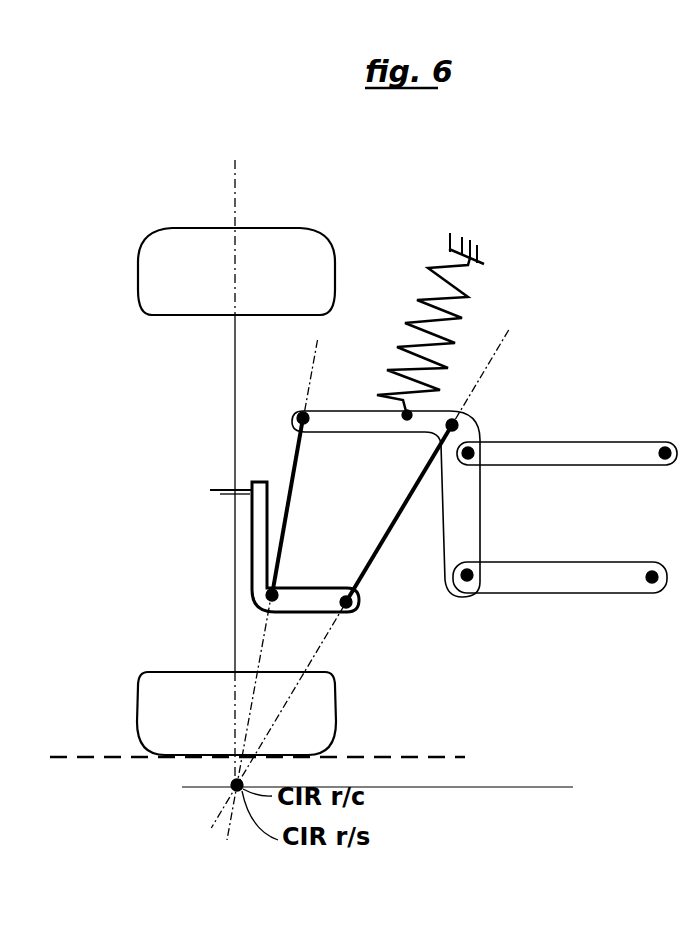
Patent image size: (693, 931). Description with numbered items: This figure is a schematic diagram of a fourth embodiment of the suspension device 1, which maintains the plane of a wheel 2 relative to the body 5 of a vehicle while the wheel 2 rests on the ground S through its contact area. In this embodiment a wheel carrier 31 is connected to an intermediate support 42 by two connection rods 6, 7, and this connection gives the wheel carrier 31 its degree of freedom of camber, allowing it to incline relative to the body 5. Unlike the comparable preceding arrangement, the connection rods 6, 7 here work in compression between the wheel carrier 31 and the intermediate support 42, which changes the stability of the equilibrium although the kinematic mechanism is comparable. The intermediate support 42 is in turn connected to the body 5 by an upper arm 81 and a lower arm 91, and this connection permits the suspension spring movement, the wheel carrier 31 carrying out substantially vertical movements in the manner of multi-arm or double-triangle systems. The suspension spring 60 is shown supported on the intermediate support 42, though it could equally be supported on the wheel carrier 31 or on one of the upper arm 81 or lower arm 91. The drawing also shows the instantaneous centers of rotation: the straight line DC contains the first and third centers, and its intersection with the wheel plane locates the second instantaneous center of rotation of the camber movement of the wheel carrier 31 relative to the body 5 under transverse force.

The suspension device 1 is at (443, 472).
The wheel 2 is at (235, 618).
The body 5 is at (472, 250).
The connection rod 6 is at (297, 473).
The connection rod 7 is at (407, 490).
The wheel carrier 31 is at (353, 607).
The intermediate support 42 is at (322, 420).
The suspension spring 60 is at (423, 298).
The upper arm 81 is at (533, 452).
The lower arm 91 is at (507, 575).
The ground S is at (413, 758).
The straight line DC is at (505, 787).